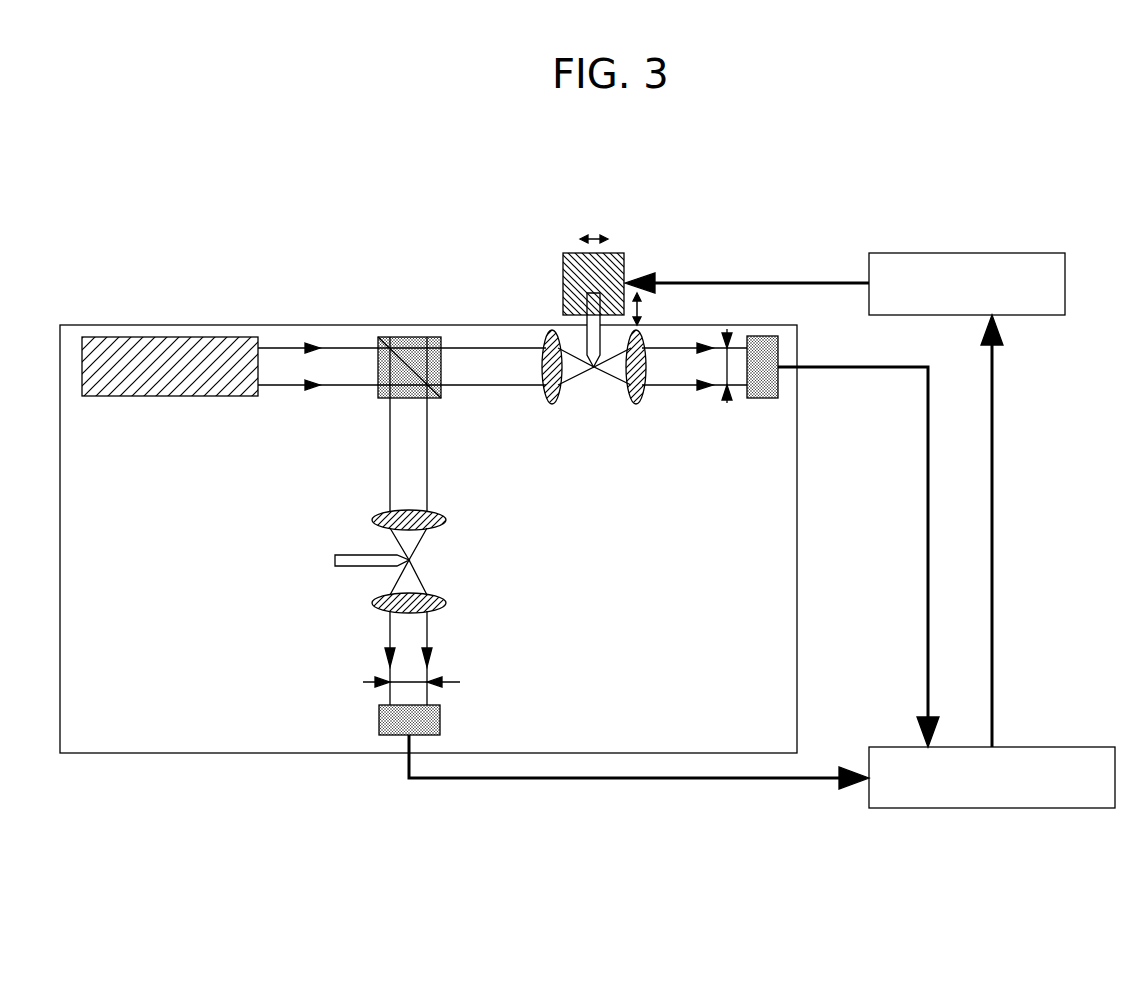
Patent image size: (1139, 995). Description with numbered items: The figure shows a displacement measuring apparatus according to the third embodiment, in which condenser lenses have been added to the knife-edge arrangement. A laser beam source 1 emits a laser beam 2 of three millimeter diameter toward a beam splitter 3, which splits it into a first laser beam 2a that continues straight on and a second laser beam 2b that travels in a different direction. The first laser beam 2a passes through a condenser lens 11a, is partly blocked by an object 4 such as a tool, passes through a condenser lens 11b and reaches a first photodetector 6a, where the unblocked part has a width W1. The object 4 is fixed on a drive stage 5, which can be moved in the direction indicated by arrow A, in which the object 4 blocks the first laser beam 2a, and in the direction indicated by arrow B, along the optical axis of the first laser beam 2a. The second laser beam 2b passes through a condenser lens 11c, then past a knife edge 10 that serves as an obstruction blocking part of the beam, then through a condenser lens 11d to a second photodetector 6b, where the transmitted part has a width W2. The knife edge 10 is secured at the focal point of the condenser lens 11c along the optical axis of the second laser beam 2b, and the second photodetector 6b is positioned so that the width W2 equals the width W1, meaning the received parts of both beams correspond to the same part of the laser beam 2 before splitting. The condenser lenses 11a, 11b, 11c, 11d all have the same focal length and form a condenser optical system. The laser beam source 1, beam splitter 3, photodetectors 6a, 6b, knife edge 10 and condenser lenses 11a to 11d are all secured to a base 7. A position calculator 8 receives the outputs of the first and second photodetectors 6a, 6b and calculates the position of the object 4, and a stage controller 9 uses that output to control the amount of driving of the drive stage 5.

The laser beam source 1 is at (162, 337).
The laser beam 2 is at (281, 386).
The first laser beam 2a is at (493, 386).
The second laser beam 2b is at (429, 468).
The beam splitter 3 is at (413, 337).
The object 4 is at (585, 338).
The drive stage 5 is at (625, 268).
The first photodetector 6a is at (763, 399).
The second photodetector 6b is at (441, 722).
The base 7 is at (256, 325).
The position calculator 8 is at (1065, 747).
The stage controller 9 is at (1065, 283).
The knife edge 10 is at (354, 555).
The condenser lens 11a is at (552, 405).
The condenser lens 11b is at (636, 405).
The condenser lens 11c is at (447, 520).
The condenser lens 11d is at (447, 603).
The arrow A is at (646, 309).
The arrow B is at (594, 223).
The width W1 is at (727, 405).
The width W2 is at (418, 680).